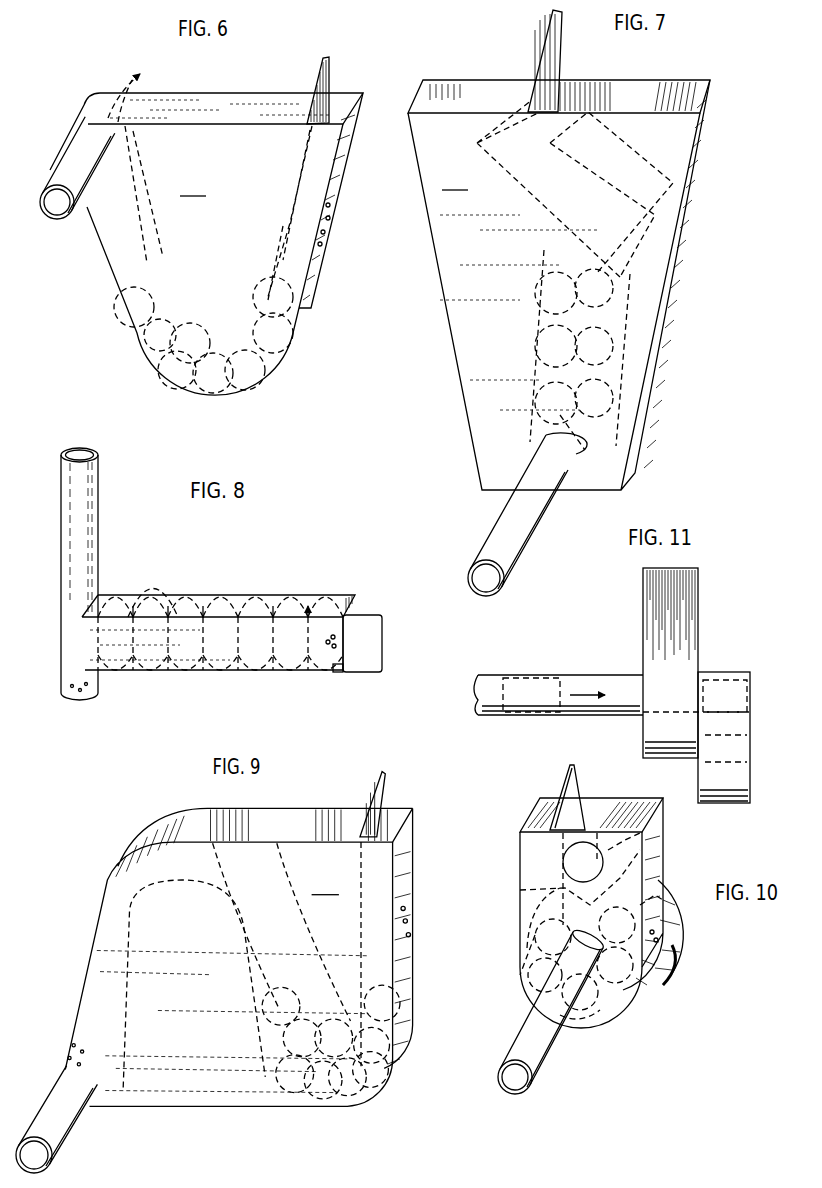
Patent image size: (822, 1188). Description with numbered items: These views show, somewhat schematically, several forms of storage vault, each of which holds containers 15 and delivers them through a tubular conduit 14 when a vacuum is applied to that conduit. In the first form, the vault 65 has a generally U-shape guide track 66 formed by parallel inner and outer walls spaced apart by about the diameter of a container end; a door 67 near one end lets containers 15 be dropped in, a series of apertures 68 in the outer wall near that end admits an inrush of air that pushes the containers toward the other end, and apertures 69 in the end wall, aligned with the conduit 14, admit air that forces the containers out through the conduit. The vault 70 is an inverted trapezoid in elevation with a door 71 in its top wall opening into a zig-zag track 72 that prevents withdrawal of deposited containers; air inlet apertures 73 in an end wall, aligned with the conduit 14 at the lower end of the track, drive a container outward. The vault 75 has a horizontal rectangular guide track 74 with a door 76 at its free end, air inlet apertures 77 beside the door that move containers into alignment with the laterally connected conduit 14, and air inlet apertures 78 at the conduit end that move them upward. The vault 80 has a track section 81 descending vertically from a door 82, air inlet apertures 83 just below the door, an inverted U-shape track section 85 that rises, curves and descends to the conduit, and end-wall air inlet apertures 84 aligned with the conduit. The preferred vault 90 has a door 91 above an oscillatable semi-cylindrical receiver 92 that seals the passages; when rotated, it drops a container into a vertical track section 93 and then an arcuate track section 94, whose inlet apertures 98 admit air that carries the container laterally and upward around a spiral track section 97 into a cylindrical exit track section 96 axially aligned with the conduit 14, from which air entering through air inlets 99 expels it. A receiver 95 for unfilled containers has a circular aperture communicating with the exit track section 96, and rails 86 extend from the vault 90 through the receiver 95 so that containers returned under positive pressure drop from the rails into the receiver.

In FIG. 6, the tubular conduit 14 is at (68, 172).
In FIG. 7, the tubular conduit 14 is at (512, 520).
In FIG. 8, the tubular conduit 14 is at (90, 530).
In FIG. 10, the tubular conduit 14 is at (530, 1022).
In FIG. 9, the tubular conduit 14 is at (65, 1129).
In FIG. 6, the containers 15 is at (150, 300).
In FIG. 7, the containers 15 is at (608, 305).
In FIG. 8, the containers 15 is at (153, 590).
In FIG. 11, the containers 15 is at (523, 685).
In FIG. 10, the containers 15 is at (648, 988).
In FIG. 9, the containers 15 is at (331, 1042).
In FIG. 6, the vault 65 is at (206, 244).
In FIG. 6, the guide track 66 is at (281, 223).
In FIG. 6, the door 67 is at (325, 78).
In FIG. 6, the apertures 68 is at (331, 220).
In FIG. 6, the apertures 69 is at (136, 92).
In FIG. 7, the vault 70 is at (559, 285).
In FIG. 7, the door 71 is at (558, 50).
In FIG. 7, the zig-zag track 72 is at (618, 162).
In FIG. 7, the air inlet apertures 73 is at (588, 452).
In FIG. 8, the guide track 74 is at (279, 597).
In FIG. 8, the vault 75 is at (249, 593).
In FIG. 8, the door 76 is at (370, 615).
In FIG. 8, the air inlet apertures 77 is at (327, 650).
In FIG. 8, the air inlet apertures 78 is at (98, 691).
In FIG. 9, the vault 80 is at (238, 957).
In FIG. 9, the track section 81 is at (361, 948).
In FIG. 9, the door 82 is at (383, 795).
In FIG. 9, the air inlet apertures 83 is at (413, 921).
In FIG. 9, the air inlet apertures 84 is at (74, 1041).
In FIG. 9, the track section 85 is at (177, 881).
In FIG. 11, the rails 86 is at (752, 712).
In FIG. 11, the vault 90 is at (688, 620).
In FIG. 10, the vault 90 is at (518, 824).
In FIG. 10, the door 91 is at (573, 780).
In FIG. 10, the receiver 92 is at (568, 857).
In FIG. 10, the vertical track section 93 is at (566, 877).
In FIG. 10, the arcuate track section 94 is at (662, 895).
In FIG. 11, the receiver 95 is at (735, 752).
In FIG. 10, the receiver 95 is at (680, 942).
In FIG. 10, the exit track section 96 is at (580, 1022).
In FIG. 10, the spiral track section 97 is at (526, 948).
In FIG. 10, the inlet apertures 98 is at (680, 955).
In FIG. 10, the air inlets 99 is at (645, 870).